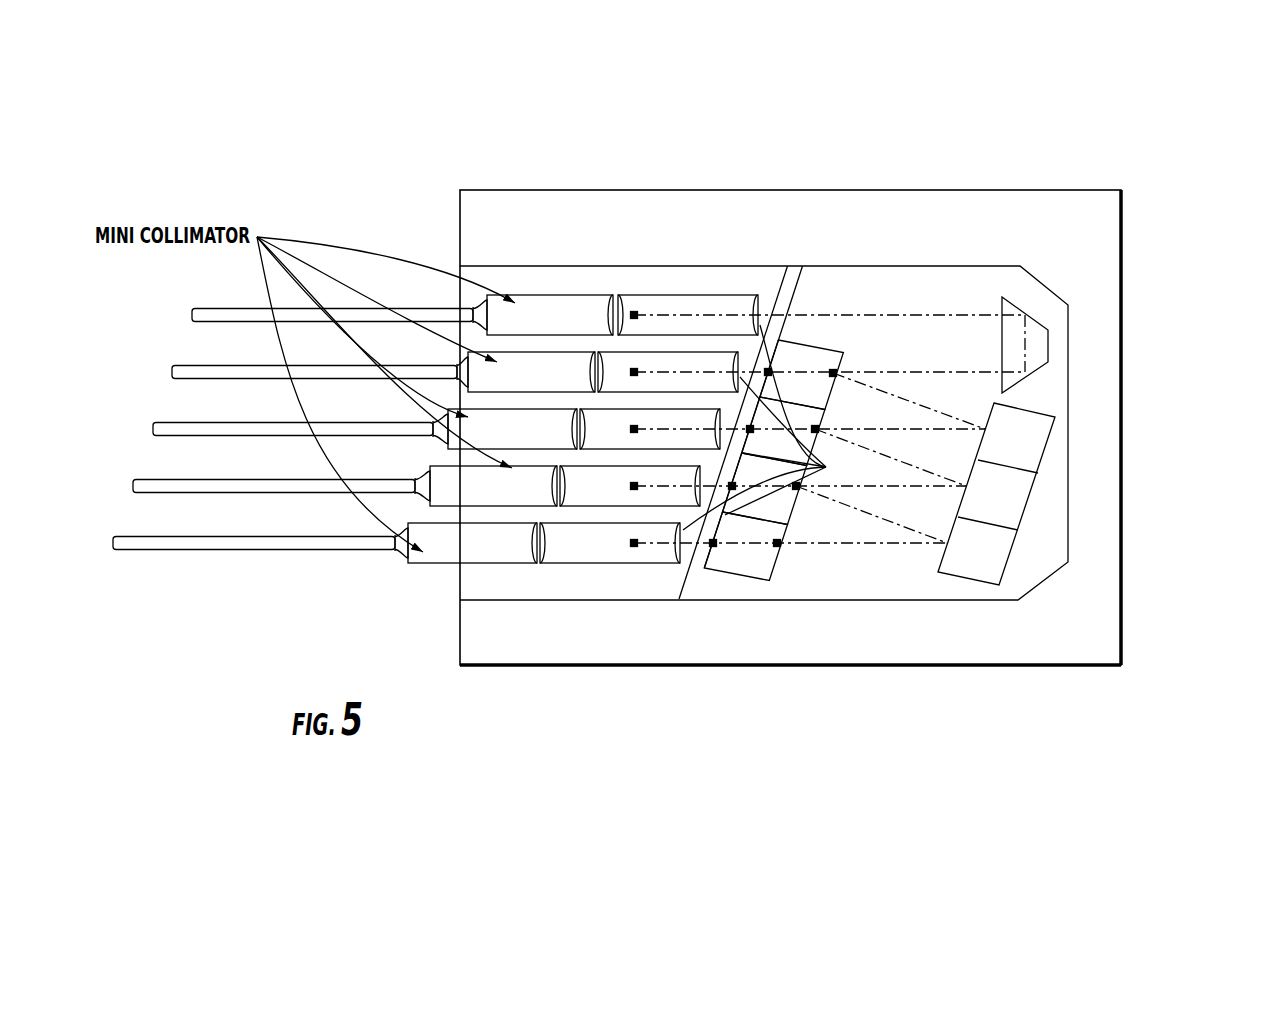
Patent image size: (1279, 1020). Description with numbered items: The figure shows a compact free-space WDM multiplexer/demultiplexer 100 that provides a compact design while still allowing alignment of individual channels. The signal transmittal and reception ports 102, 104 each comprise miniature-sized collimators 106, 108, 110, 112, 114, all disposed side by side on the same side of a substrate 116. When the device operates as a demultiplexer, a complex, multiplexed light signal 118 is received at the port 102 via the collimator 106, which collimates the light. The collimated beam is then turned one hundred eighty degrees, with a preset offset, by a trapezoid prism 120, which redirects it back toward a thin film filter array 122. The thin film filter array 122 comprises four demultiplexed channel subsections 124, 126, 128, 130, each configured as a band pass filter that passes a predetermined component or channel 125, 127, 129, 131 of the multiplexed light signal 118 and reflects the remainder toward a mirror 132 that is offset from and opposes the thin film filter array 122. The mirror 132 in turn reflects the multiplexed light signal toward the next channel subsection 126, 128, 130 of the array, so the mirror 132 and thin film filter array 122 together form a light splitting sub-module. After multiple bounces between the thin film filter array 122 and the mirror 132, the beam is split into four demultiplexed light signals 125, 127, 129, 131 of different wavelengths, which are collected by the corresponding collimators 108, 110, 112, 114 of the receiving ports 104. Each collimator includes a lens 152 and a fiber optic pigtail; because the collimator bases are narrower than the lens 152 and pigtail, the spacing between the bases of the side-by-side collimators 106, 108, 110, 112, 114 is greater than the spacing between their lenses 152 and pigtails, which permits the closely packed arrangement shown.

The compact free-space WDM multiplexer/demultiplexer 100 is at (287, 95).
The signal transmittal port 102 is at (456, 306).
The signal reception ports 104 is at (454, 367).
The miniature-sized collimator 106 is at (560, 328).
The miniature-sized collimator 108 is at (542, 384).
The miniature-sized collimator 110 is at (521, 442).
The miniature-sized collimator 112 is at (503, 498).
The miniature-sized collimator 114 is at (483, 556).
The substrate 116 is at (891, 235).
The multiplexed light signal 118 is at (945, 313).
The trapezoid prism 120 is at (1060, 339).
The thin film filter array 122 is at (741, 584).
The demultiplexed channel subsection 124 is at (792, 363).
The demultiplexed light signal 125 is at (693, 370).
The demultiplexed channel subsection 126 is at (800, 417).
The demultiplexed light signal 127 is at (648, 424).
The demultiplexed channel subsection 128 is at (787, 515).
The demultiplexed light signal 129 is at (647, 484).
The demultiplexed channel subsection 130 is at (728, 557).
The demultiplexed light signal 131 is at (648, 542).
The mirror 132 is at (975, 592).
The lens 152 is at (814, 467).